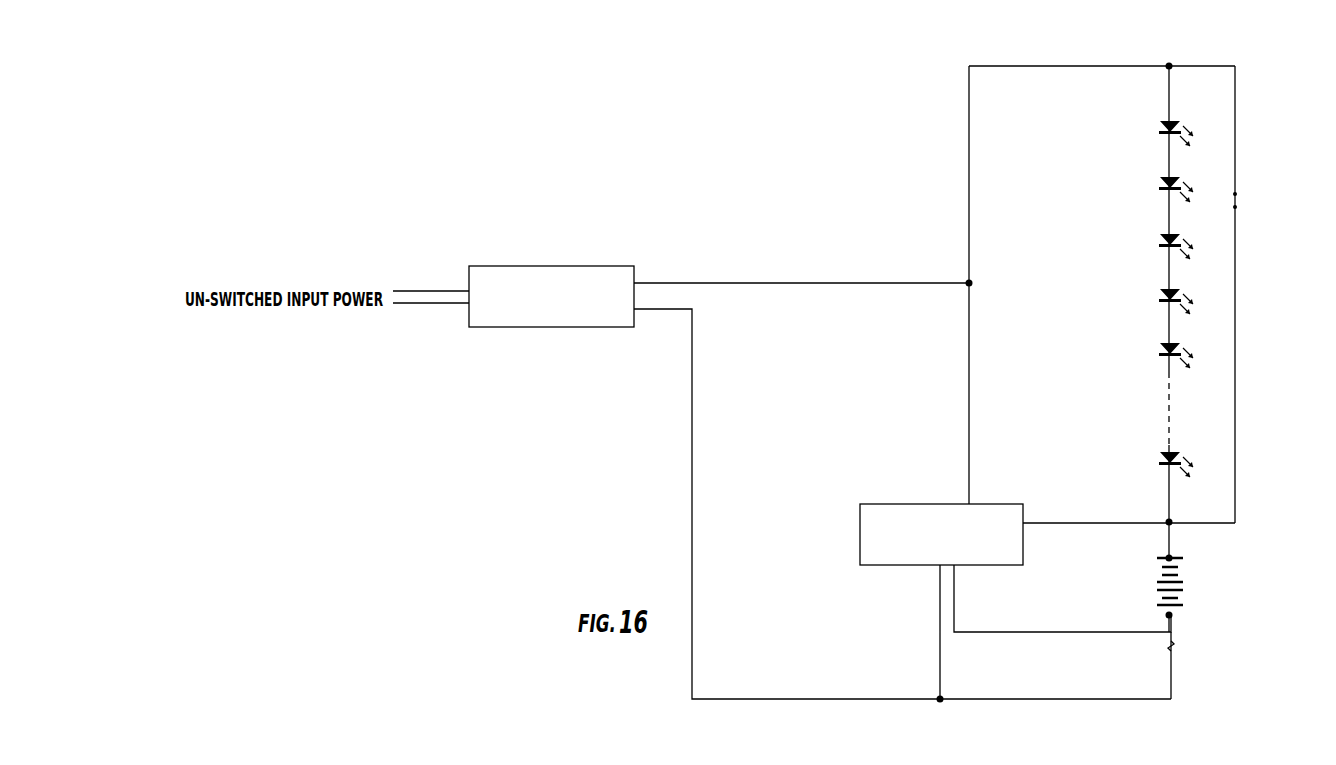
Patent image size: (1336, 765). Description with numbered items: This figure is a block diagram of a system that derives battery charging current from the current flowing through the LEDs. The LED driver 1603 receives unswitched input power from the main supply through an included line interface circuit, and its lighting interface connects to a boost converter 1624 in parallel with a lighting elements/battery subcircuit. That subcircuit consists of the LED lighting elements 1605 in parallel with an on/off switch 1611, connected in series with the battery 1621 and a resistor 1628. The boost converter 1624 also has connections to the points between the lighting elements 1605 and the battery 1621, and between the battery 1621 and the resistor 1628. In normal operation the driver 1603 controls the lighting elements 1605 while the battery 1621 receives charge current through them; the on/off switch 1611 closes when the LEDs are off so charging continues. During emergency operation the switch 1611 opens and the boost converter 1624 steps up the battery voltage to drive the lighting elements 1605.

The LED driver 1603 is at (566, 306).
The boost converter 1624 is at (958, 543).
The LED lighting element 1605 is at (1160, 186).
The on/off switch 1611 is at (1228, 196).
The battery 1621 is at (1188, 607).
The resistor 1628 is at (1173, 648).